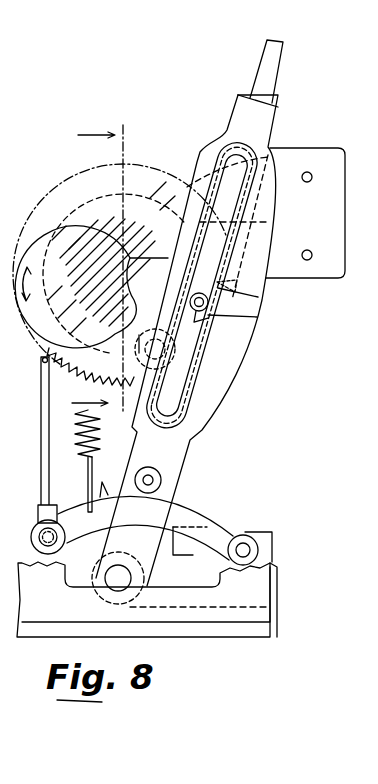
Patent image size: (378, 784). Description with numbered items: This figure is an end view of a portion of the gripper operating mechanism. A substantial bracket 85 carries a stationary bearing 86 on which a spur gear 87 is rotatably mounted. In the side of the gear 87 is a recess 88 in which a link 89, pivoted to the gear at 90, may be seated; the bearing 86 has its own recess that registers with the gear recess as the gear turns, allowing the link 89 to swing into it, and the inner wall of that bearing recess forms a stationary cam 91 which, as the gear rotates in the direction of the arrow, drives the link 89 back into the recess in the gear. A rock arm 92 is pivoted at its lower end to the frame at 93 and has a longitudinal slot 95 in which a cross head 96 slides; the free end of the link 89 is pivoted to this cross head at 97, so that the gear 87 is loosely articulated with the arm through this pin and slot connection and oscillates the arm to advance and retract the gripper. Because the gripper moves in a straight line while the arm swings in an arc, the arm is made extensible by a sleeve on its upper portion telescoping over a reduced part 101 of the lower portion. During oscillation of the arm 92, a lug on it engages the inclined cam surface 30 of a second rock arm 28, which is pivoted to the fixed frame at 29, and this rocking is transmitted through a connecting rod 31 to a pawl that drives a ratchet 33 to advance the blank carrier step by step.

The rock arm 28 is at (193, 520).
The pivot 29 is at (245, 546).
The cam surface 30 is at (138, 473).
The connecting rod 31 is at (42, 446).
The ratchet 33 is at (84, 460).
The bracket 85 is at (305, 213).
The bearing 86 is at (97, 229).
The spur gear 87 is at (90, 363).
The recess 88 is at (247, 293).
The link 89 is at (241, 317).
The pivot 90 is at (138, 350).
The stationary cam 91 is at (118, 302).
The rock arm 92 is at (217, 378).
The pivot 93 is at (123, 578).
The longitudinal slot 95 is at (245, 210).
The cross head 96 is at (193, 295).
The pivot 97 is at (213, 317).
The reduced part 101 is at (263, 80).